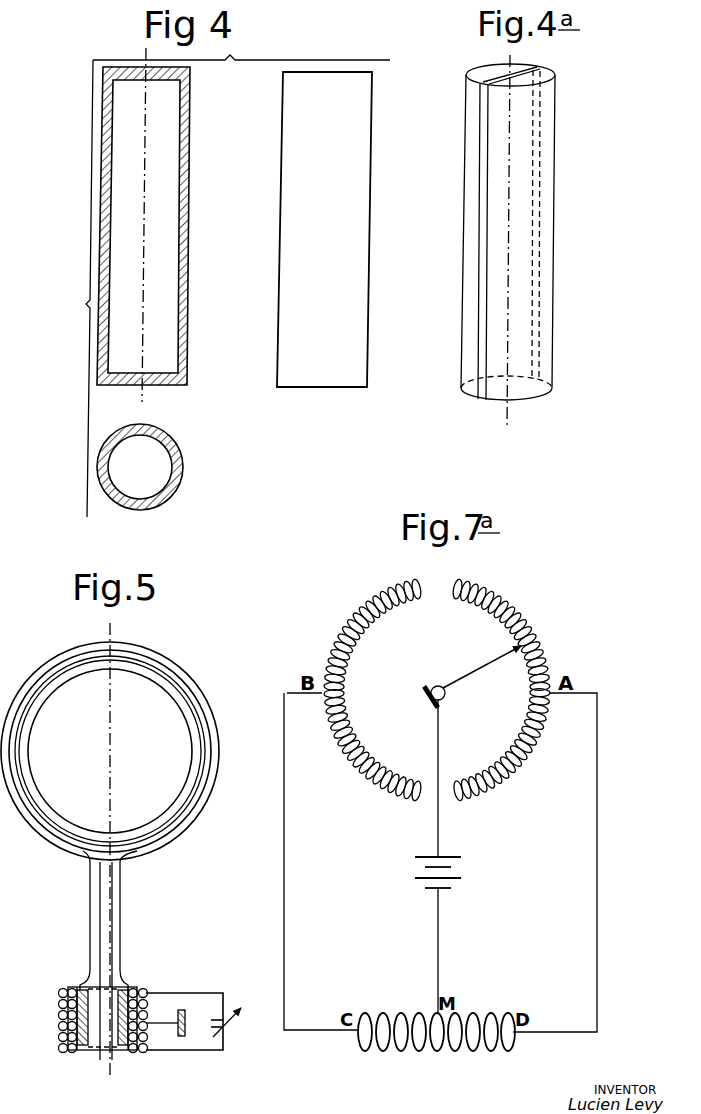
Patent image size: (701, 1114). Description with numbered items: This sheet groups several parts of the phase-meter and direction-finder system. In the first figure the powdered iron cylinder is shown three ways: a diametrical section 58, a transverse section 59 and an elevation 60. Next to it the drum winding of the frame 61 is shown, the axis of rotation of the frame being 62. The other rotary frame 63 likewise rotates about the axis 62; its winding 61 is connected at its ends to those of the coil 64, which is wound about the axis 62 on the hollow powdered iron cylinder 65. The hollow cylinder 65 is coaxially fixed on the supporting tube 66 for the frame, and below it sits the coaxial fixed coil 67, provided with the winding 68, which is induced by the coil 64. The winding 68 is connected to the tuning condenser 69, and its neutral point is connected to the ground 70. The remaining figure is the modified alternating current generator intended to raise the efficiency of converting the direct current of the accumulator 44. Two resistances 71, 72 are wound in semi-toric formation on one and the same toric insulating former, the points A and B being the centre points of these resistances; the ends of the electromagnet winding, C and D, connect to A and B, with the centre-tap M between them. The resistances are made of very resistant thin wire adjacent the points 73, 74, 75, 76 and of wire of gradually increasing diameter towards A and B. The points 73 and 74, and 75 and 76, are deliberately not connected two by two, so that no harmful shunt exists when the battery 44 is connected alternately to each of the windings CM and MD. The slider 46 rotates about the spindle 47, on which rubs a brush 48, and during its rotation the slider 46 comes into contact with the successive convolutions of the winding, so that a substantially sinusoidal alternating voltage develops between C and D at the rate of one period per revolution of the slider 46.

In FIG. 4, the diametrical section 58 is at (183, 167).
In FIG. 4, the transverse section 59 is at (178, 455).
In FIG. 4, the elevation 60 is at (363, 255).
In FIG. 4A, the winding 61 is at (483, 285).
In FIG. 5, the winding 61 is at (160, 668).
In FIG. 4, the axis of rotation 62 is at (145, 197).
In FIG. 4A, the axis of rotation 62 is at (508, 233).
In FIG. 5, the axis of rotation 62 is at (112, 632).
In FIG. 5, the frame 63 is at (197, 688).
In FIG. 5, the coil 64 is at (62, 1006).
In FIG. 5, the hollow powdered iron cylinder 65 is at (63, 1022).
In FIG. 5, the supporting tube 66 is at (120, 918).
In FIG. 5, the coaxial fixed coil 67 is at (70, 1052).
In FIG. 5, the winding 68 is at (63, 1042).
In FIG. 5, the tuning condenser 69 is at (237, 1022).
In FIG. 5, the ground 70 is at (177, 1023).
In FIG. 7A, the resistance 71 is at (335, 628).
In FIG. 7A, the resistance 72 is at (555, 669).
In FIG. 7A, the resistance end point 73 is at (418, 606).
In FIG. 7A, the resistance end point 74 is at (456, 608).
In FIG. 7A, the resistance end point 75 is at (374, 758).
In FIG. 7A, the resistance end point 76 is at (498, 757).
In FIG. 7A, the accumulator 44 is at (445, 871).
In FIG. 7A, the slider 46 is at (517, 645).
In FIG. 7A, the spindle 47 is at (446, 693).
In FIG. 7A, the brush 48 is at (430, 693).